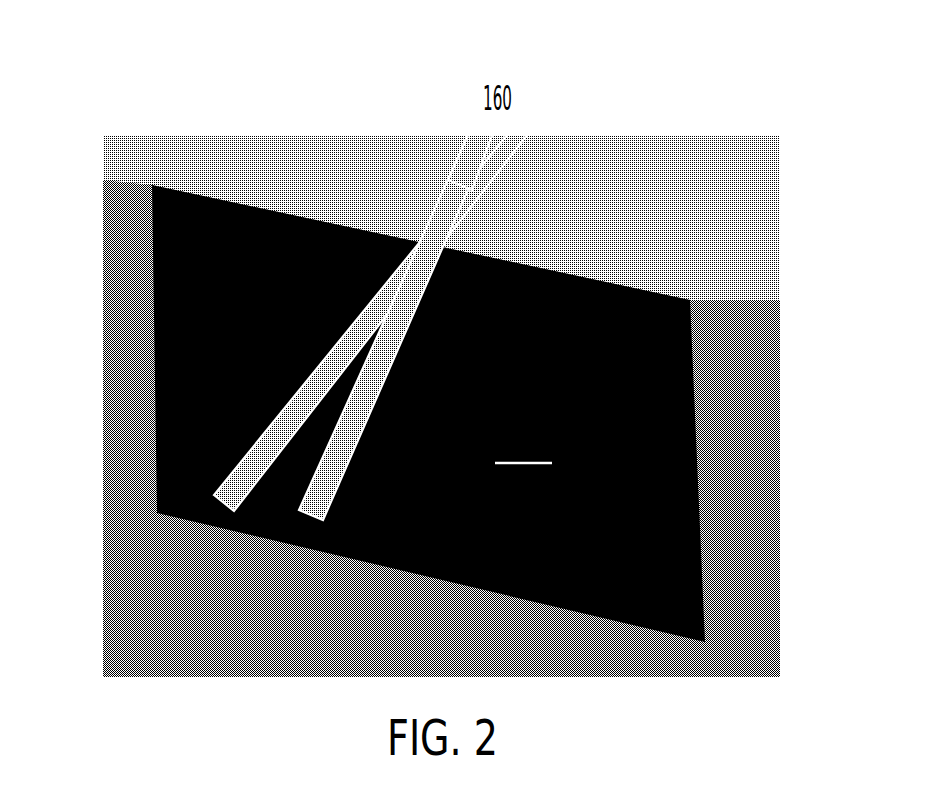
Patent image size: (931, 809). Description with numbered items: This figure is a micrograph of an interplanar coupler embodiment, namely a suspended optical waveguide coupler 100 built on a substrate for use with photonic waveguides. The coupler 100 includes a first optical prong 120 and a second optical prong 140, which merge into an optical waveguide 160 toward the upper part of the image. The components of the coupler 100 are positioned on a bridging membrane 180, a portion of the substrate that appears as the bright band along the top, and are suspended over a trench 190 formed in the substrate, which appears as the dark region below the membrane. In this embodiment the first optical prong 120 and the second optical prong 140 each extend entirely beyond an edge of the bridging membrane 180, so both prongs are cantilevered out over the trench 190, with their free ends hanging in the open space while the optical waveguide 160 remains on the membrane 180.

The suspended optical waveguide coupler 100 is at (436, 345).
The first optical prong 120 is at (278, 393).
The second optical prong 140 is at (323, 492).
The optical waveguide 160 is at (481, 152).
The bridging membrane 180 is at (672, 215).
The trench 190 is at (240, 276).